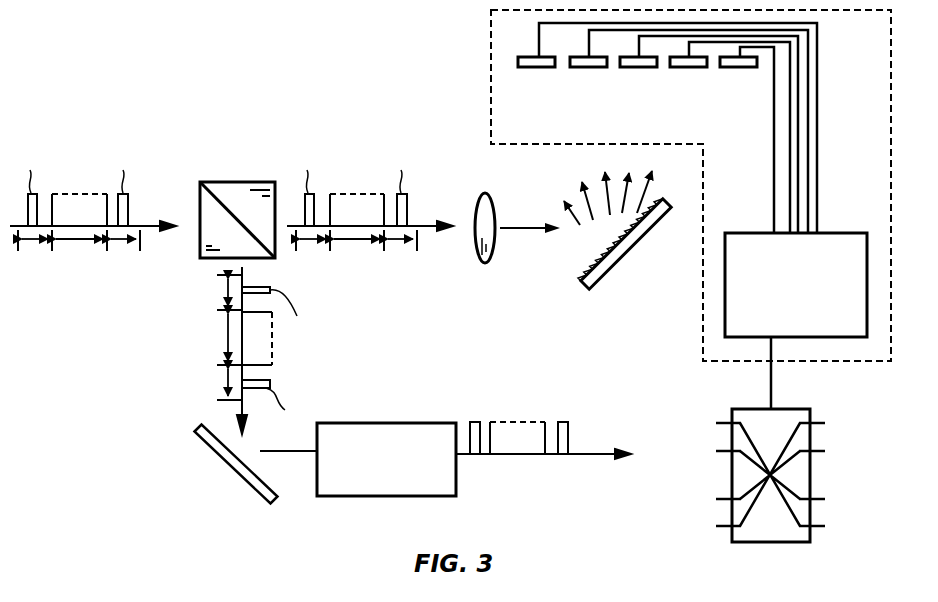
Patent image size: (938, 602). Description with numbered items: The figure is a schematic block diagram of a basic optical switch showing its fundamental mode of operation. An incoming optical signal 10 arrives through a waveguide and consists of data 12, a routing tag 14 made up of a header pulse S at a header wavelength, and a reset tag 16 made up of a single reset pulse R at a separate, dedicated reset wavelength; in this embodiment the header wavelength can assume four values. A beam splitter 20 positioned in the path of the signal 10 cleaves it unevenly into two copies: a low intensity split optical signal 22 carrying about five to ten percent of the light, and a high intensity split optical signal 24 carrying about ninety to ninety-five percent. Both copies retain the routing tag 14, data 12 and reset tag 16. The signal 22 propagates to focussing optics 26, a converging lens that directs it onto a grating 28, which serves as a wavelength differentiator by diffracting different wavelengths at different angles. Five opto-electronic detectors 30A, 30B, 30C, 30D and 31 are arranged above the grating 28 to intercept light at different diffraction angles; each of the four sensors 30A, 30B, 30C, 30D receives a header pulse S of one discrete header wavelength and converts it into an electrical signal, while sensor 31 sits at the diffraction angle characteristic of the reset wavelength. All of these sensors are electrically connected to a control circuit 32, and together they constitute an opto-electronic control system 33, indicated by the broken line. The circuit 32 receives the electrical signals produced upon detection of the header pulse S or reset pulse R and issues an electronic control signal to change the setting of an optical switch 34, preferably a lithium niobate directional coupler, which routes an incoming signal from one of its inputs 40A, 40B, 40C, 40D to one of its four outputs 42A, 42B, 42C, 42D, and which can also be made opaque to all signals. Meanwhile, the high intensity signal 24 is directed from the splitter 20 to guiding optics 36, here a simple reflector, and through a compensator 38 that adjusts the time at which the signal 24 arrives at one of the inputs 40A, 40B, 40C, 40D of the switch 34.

The optical signal 10 is at (85, 140).
The data 12 is at (80, 246).
The routing tag 14 is at (125, 252).
The reset tag 16 is at (35, 252).
The beam splitter 20 is at (233, 195).
The split optical signal 22 is at (346, 142).
The split optical signal 24 is at (312, 361).
The focussing optics 26 is at (494, 258).
The grating 28 is at (611, 272).
The opto-electronic detector 30A is at (584, 68).
The opto-electronic detector 30B is at (636, 68).
The opto-electronic detector 30C is at (690, 68).
The opto-electronic detector 30D is at (740, 68).
The opto-electronic detector 31 is at (530, 68).
The control circuit 32 is at (834, 232).
The opto-electronic control system 33 is at (490, 95).
The optical switch 34 is at (771, 475).
The guiding optics 36 is at (214, 458).
The compensator 38 is at (425, 422).
The input 40A is at (709, 423).
The input 40B is at (709, 451).
The input 40C is at (709, 499).
The input 40D is at (708, 526).
The output 42A is at (832, 423).
The output 42B is at (831, 451).
The output 42C is at (831, 499).
The output 42D is at (832, 526).